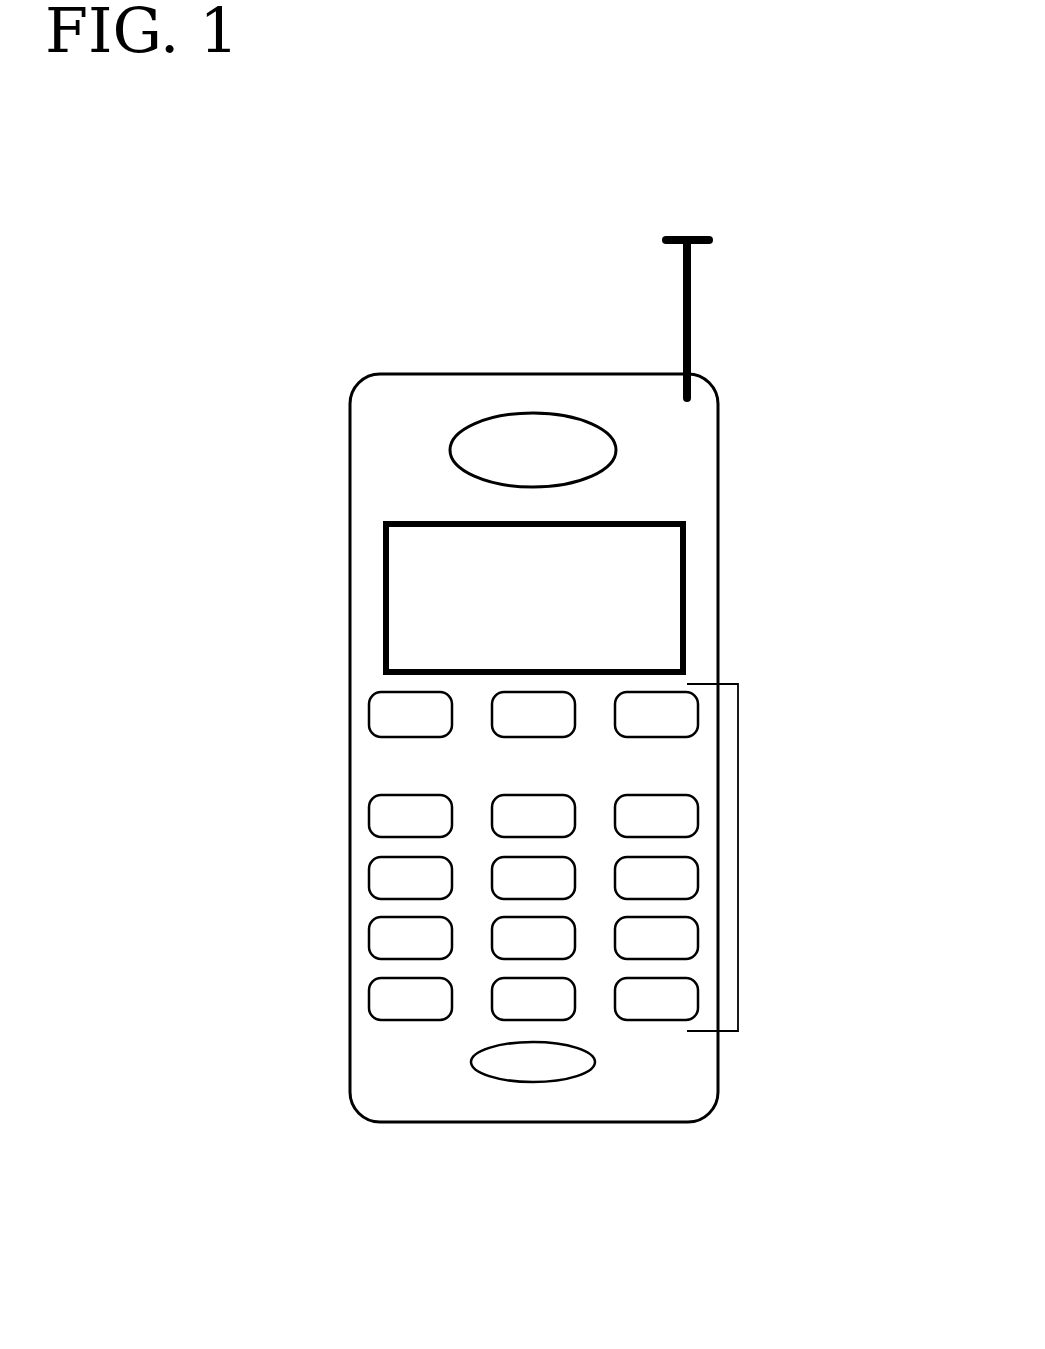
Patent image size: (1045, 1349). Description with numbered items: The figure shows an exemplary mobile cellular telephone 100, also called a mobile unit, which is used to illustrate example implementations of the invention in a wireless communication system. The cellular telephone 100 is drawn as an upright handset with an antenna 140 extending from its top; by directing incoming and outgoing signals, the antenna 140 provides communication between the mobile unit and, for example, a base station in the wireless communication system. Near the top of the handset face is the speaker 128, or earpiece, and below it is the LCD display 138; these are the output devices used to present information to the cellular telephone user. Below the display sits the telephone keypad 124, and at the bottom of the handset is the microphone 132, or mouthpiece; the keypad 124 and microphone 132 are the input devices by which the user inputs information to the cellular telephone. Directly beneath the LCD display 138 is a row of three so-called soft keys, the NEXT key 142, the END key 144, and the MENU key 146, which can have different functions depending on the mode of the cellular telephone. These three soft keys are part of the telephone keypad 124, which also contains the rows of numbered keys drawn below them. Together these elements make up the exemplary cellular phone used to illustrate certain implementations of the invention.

The mobile cellular telephone 100 is at (708, 168).
The telephone keypad 124 is at (738, 840).
The speaker 128 is at (497, 417).
The microphone 132 is at (548, 1086).
The LCD display 138 is at (378, 580).
The antenna 140 is at (692, 283).
The NEXT key 142 is at (370, 692).
The END key 144 is at (493, 736).
The MENU key 146 is at (697, 712).